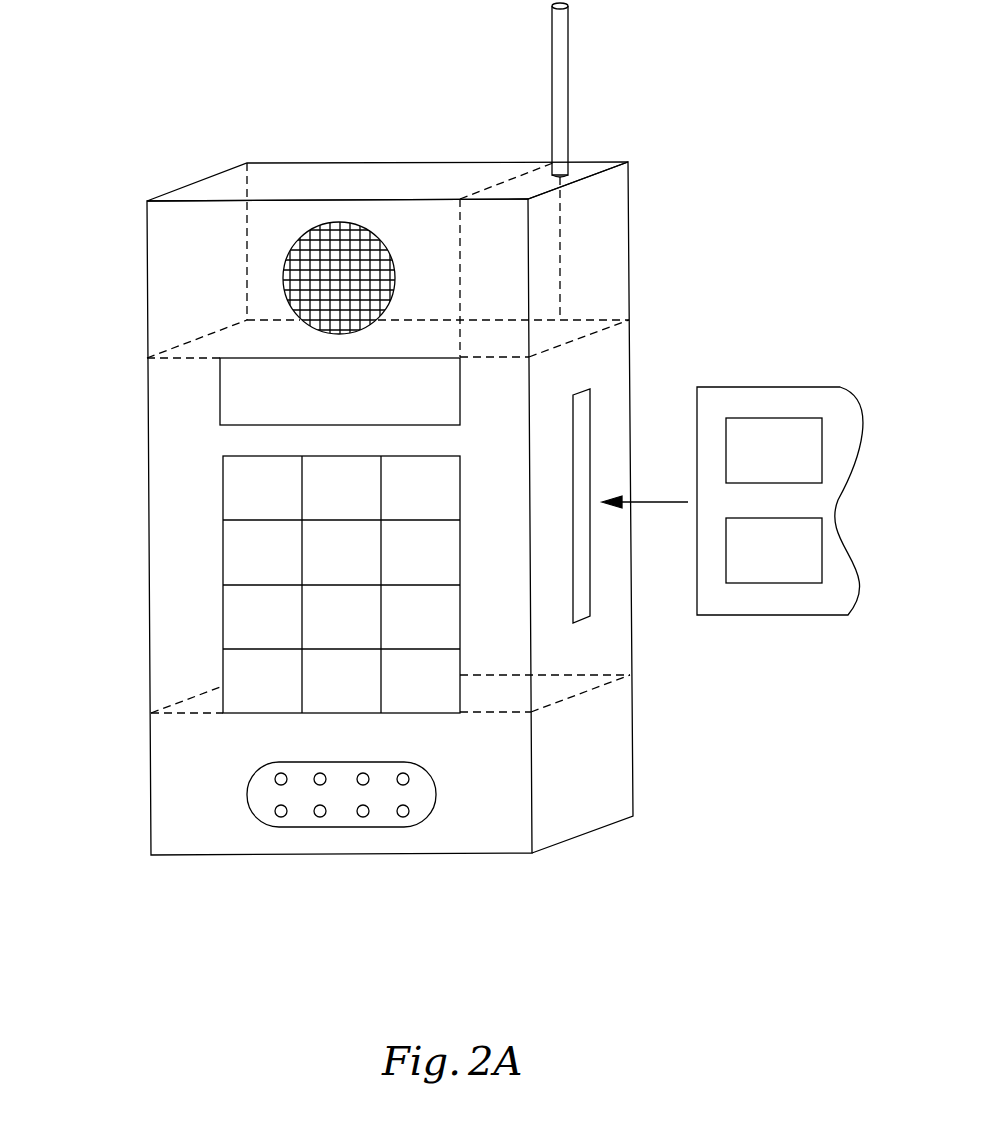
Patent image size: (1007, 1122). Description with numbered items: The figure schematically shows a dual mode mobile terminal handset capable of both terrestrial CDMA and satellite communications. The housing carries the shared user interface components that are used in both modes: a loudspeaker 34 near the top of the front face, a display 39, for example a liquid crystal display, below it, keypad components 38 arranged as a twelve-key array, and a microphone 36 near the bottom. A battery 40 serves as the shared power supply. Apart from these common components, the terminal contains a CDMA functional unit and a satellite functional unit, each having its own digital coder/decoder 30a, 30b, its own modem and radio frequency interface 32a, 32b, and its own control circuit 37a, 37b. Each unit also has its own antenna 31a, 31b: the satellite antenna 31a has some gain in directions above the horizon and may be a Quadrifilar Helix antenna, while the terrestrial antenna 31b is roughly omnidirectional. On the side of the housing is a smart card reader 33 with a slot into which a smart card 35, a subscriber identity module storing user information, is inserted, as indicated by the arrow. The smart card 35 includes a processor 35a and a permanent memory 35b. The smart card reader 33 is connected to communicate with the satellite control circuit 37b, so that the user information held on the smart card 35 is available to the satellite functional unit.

The digital coder/decoder 30a is at (390, 477).
The digital coder/decoder 30b is at (298, 180).
The satellite antenna 31a is at (632, 90).
The terrestrial antenna 31b is at (568, 76).
The modem / radio frequency interface 32a is at (449, 260).
The modem / radio frequency interface 32b is at (600, 243).
The smart card reader 33 is at (629, 341).
The loudspeaker 34 is at (282, 257).
The smart card 35 is at (780, 494).
The processor 35a is at (768, 435).
The permanent memory 35b is at (790, 567).
The microphone 36 is at (298, 828).
The control circuit 37a is at (283, 527).
The control circuit 37b is at (165, 510).
The keypad components 38 is at (232, 610).
The display 39 is at (220, 393).
The battery 40 is at (615, 760).